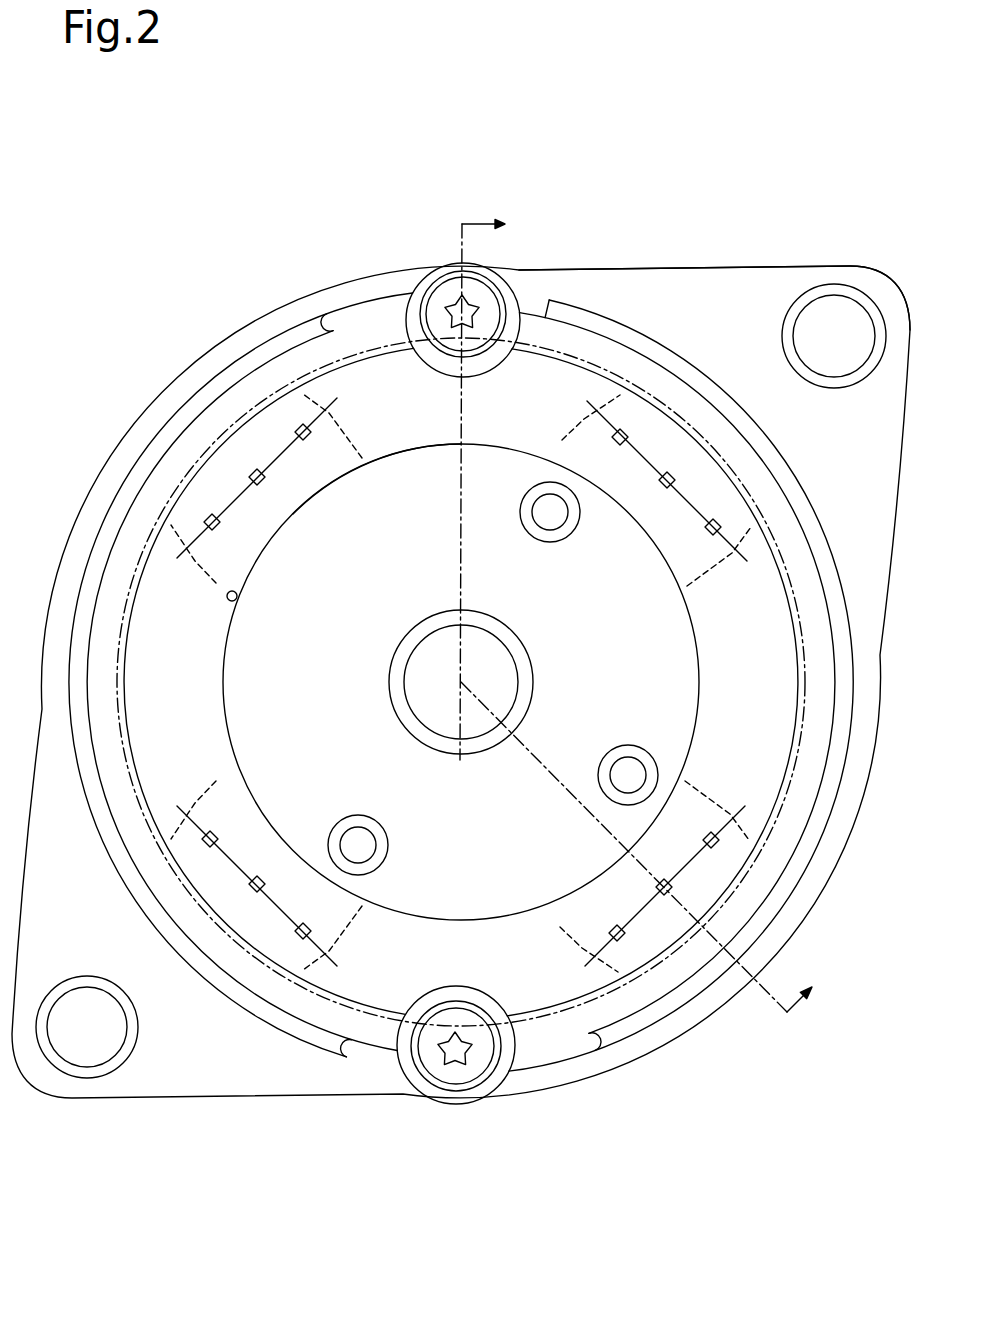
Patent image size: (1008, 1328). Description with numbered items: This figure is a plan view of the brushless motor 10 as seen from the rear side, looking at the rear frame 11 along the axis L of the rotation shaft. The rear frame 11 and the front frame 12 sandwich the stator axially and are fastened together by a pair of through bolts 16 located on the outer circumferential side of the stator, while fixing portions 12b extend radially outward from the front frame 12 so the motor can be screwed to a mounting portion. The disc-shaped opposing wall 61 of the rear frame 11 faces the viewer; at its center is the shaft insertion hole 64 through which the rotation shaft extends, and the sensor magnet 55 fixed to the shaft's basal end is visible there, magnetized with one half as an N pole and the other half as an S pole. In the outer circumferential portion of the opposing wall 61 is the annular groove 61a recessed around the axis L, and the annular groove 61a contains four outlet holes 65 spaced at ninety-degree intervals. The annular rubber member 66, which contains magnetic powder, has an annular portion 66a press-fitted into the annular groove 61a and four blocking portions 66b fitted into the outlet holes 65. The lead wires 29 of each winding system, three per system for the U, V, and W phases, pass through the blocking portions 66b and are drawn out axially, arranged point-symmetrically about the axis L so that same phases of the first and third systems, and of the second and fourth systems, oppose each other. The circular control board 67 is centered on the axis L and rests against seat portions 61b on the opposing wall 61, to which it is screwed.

The motor 10 is at (764, 190).
The rear frame 11 is at (346, 306).
The front frame 12 is at (384, 266).
The fixing portion 12b is at (803, 266).
The through bolt 16 is at (432, 278).
The lead wire 29 is at (770, 1103).
The sensor magnet 55 is at (397, 702).
The opposing wall 61 is at (555, 1037).
The annular groove 61a is at (238, 596).
The seat portion 61b is at (521, 514).
The shaft insertion hole 64 is at (446, 750).
The outlet hole 65 is at (352, 437).
The rubber member 66 is at (320, 496).
The annular portion 66a is at (391, 448).
The blocking portion 66b is at (196, 565).
The control board 67 is at (336, 320).
The axis L is at (459, 682).